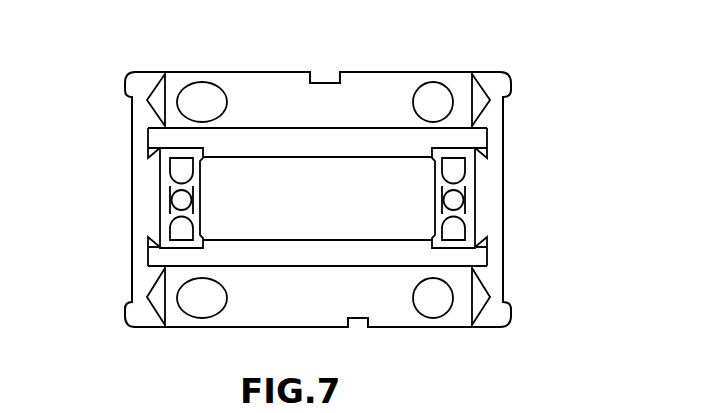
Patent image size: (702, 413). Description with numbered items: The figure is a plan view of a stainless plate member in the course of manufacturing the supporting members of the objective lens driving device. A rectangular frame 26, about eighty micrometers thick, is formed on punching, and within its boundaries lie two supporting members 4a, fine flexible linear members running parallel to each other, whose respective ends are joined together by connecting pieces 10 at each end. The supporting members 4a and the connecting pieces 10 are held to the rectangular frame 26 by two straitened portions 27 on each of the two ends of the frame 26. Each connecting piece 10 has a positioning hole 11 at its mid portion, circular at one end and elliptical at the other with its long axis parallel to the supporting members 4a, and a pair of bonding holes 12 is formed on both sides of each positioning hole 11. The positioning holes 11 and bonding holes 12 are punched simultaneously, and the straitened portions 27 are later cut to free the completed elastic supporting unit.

The rectangular frame 26 is at (455, 82).
The straitened portions 27 is at (158, 150).
The bonding holes 12 is at (183, 178).
The positioning hole 11 is at (178, 198).
The connecting piece 10 is at (170, 207).
The supporting member 4a is at (345, 157).